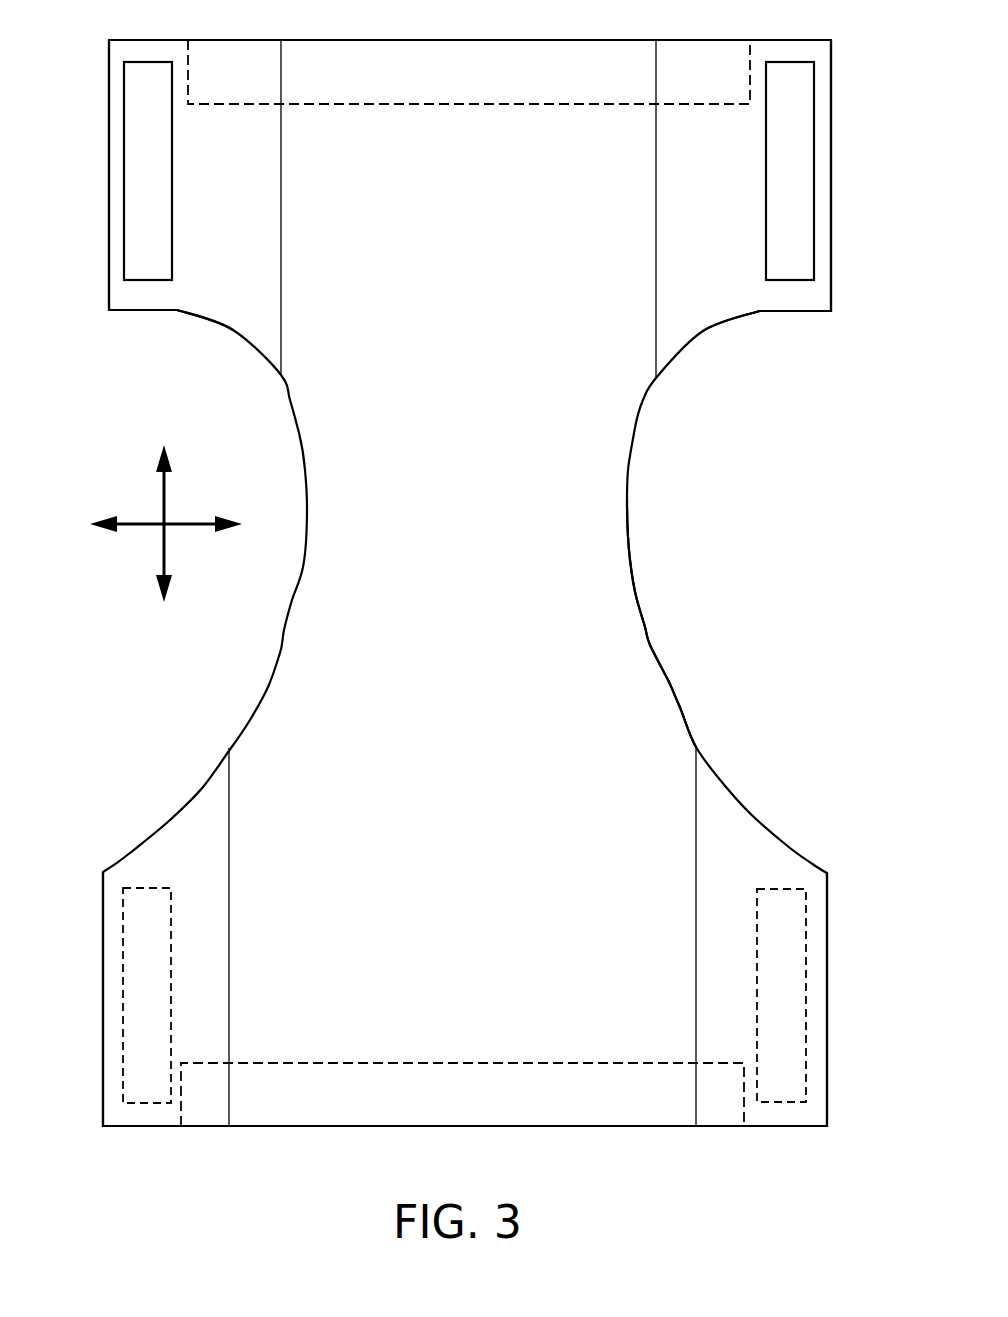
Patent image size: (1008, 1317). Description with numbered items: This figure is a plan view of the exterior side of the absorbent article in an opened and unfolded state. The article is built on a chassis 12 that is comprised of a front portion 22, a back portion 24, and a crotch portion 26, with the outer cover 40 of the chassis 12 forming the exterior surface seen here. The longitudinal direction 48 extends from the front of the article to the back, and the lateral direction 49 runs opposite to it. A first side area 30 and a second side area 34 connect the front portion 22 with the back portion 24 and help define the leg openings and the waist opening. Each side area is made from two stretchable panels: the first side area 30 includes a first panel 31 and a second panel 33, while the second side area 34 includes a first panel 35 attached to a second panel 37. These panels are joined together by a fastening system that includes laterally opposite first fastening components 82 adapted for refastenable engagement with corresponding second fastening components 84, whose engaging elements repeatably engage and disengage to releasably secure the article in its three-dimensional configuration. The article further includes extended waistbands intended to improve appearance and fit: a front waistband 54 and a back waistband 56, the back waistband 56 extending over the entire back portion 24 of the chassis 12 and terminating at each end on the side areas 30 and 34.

The chassis 12 is at (615, 489).
The front portion 22 is at (481, 252).
The back portion 24 is at (478, 943).
The crotch portion 26 is at (478, 562).
The first side area 30 is at (231, 52).
The first panel 31 is at (143, 1113).
The second panel 33 is at (203, 300).
The second side area 34 is at (725, 52).
The first panel 35 is at (763, 1113).
The second panel 37 is at (709, 304).
The outer cover 40 is at (624, 627).
The longitudinal direction 48 is at (165, 490).
The lateral direction 49 is at (143, 522).
The front waistband 54 is at (532, 52).
The back waistband 56 is at (545, 1101).
The first fastening components 82 is at (137, 988).
The second fastening components 84 is at (136, 190).